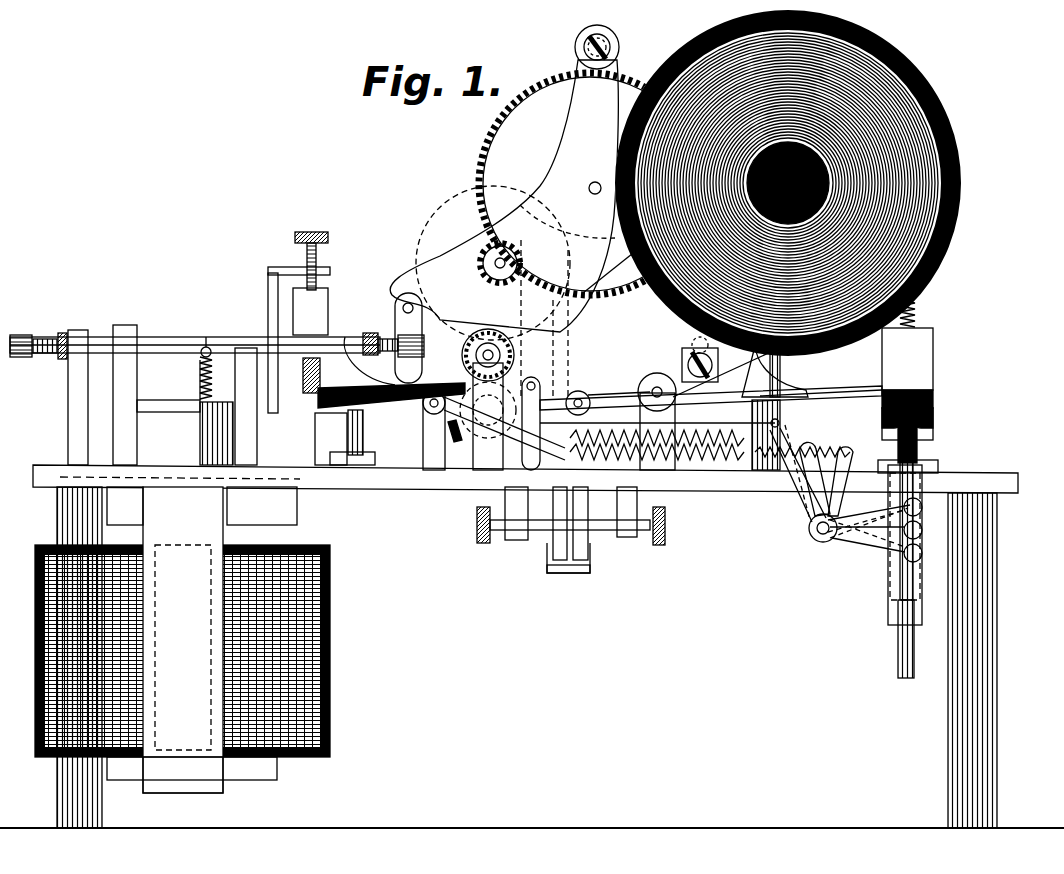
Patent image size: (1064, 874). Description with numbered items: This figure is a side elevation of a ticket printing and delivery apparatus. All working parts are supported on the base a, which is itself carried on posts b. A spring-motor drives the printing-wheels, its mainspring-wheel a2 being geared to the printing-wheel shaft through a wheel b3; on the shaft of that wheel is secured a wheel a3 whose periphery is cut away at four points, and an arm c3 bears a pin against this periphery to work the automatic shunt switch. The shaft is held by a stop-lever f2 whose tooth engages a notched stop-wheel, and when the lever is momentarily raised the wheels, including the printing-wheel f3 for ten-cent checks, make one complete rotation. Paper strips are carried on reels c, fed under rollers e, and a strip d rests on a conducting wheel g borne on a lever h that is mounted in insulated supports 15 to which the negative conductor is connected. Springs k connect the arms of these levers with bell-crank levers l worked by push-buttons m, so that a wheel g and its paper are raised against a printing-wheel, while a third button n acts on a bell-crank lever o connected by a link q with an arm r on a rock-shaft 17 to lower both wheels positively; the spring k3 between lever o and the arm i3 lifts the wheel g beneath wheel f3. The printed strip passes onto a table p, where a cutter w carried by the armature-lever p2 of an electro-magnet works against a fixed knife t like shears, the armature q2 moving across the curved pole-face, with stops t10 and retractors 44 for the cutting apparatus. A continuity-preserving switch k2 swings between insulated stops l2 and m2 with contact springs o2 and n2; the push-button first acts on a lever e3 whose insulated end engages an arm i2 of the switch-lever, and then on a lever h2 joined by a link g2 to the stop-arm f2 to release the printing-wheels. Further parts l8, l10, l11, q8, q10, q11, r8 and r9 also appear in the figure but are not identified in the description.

The base a is at (378, 487).
The mainspring-wheel a2 is at (484, 142).
The wheel a3 is at (485, 270).
The posts b is at (57, 517).
The wheel b3 is at (478, 252).
The reels c is at (948, 248).
The arm c3 is at (536, 352).
The strip of paper d is at (770, 360).
The rollers e is at (657, 382).
The lever e3 is at (527, 413).
The stop-lever f2 is at (395, 305).
The printing-wheel f3 is at (555, 350).
The wheel g is at (488, 428).
The link g2 is at (578, 372).
The lever h is at (494, 431).
The lever h2 is at (832, 396).
The arm i2 is at (477, 525).
The arm i3 is at (555, 523).
The springs k is at (798, 455).
The switch k2 is at (585, 462).
The spring k3 is at (732, 462).
The bell-crank levers l is at (922, 530).
The stop l2 is at (475, 355).
The spring l8 is at (198, 410).
The arm l10 is at (345, 337).
The knob l11 is at (20, 336).
The push-buttons m is at (935, 420).
The stop m2 is at (665, 530).
The button n is at (933, 395).
The spring n2 is at (590, 548).
The bell-crank lever o is at (875, 510).
The spring o2 is at (547, 550).
The table p is at (354, 437).
The armature-lever p2 is at (113, 430).
The link q is at (711, 404).
The armature q2 is at (262, 506).
The pin q8 is at (206, 342).
The nut q10 is at (368, 333).
The screw q11 is at (60, 336).
The arm r is at (657, 407).
The bracket r8 is at (268, 275).
The shaft r9 is at (165, 333).
The fixed knife t is at (315, 412).
The stops t10 is at (328, 237).
The cutter w is at (303, 390).
The supports 15 is at (446, 431).
The rock-shaft 17 is at (619, 406).
The retractors 44 is at (200, 372).